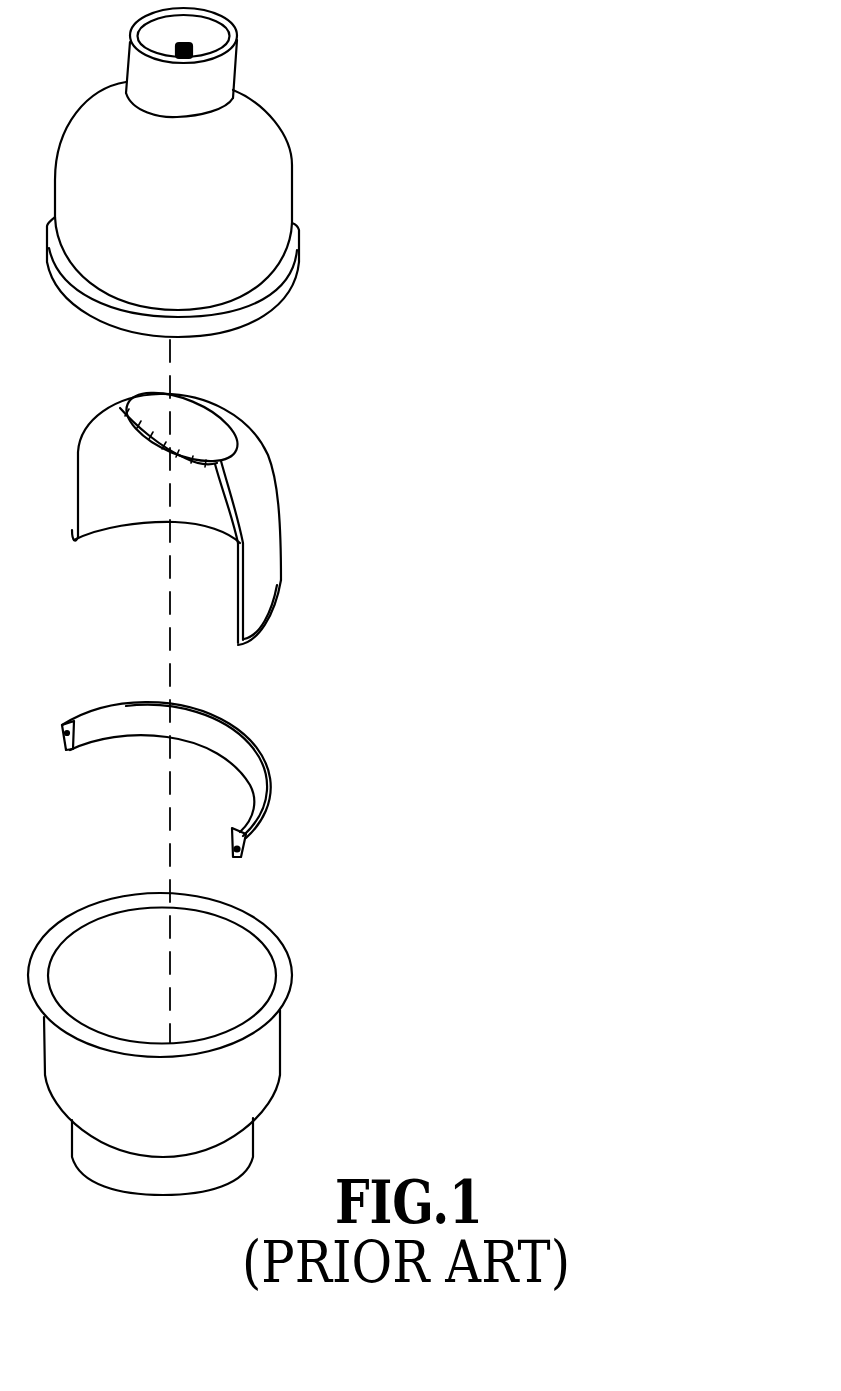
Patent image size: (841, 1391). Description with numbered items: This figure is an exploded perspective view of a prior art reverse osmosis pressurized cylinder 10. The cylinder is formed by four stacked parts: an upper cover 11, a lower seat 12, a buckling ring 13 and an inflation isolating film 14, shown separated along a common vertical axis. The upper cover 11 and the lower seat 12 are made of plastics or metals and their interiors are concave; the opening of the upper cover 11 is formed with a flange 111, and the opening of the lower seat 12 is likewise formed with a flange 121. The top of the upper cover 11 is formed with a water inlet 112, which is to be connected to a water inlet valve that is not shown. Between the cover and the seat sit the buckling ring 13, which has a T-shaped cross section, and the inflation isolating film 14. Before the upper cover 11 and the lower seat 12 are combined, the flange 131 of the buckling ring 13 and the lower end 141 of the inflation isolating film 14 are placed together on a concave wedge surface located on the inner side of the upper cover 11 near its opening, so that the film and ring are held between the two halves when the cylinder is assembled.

The gas cartridge / canister assembly 10 is at (261, 168).
The upper cover 11 is at (250, 140).
The flange 111 is at (297, 272).
The water inlet 112 is at (188, 42).
The lower seat 12 is at (298, 1044).
The flange 121 is at (280, 983).
The buckling ring 13 is at (279, 779).
The flange 131 is at (273, 815).
The inflation isolating film 14 is at (272, 512).
The lower end 141 is at (283, 605).